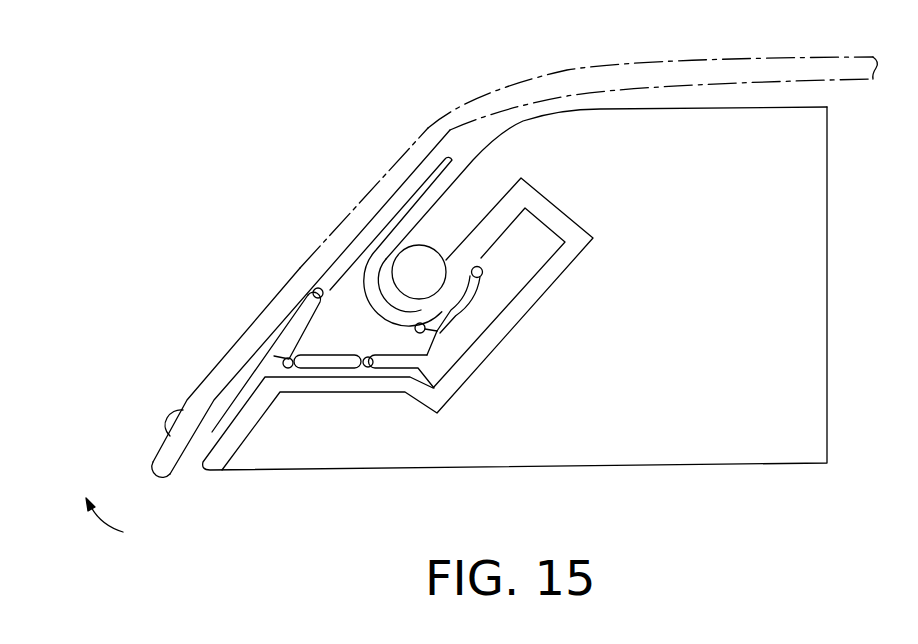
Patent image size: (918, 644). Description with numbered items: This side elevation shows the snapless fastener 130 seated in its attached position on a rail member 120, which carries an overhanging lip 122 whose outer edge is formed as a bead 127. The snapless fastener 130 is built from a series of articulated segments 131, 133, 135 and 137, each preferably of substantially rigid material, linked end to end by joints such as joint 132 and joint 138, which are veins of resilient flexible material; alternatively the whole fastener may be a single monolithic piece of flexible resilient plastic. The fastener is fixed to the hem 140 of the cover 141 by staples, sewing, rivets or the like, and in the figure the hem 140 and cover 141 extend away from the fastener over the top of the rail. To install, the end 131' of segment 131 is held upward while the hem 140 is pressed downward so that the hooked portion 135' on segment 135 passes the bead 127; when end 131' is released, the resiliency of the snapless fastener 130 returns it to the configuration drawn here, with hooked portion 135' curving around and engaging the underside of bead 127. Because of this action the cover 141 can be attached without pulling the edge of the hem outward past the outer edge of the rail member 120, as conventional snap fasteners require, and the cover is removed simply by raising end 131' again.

The rail member 120 is at (655, 466).
The overhanging lip 122 is at (452, 207).
The bead 127 is at (411, 304).
The snapless fastener 130 is at (160, 365).
The articulated segment 131 is at (135, 406).
The end 131' is at (194, 498).
The joint 132 is at (283, 358).
The articulated segment 133 is at (367, 237).
The articulated segment 135 is at (509, 310).
The hooked portion 135' is at (557, 277).
The articulated segment 137 is at (318, 368).
The joint 138 is at (370, 369).
The hem 140 is at (203, 362).
The cover 141 is at (585, 77).